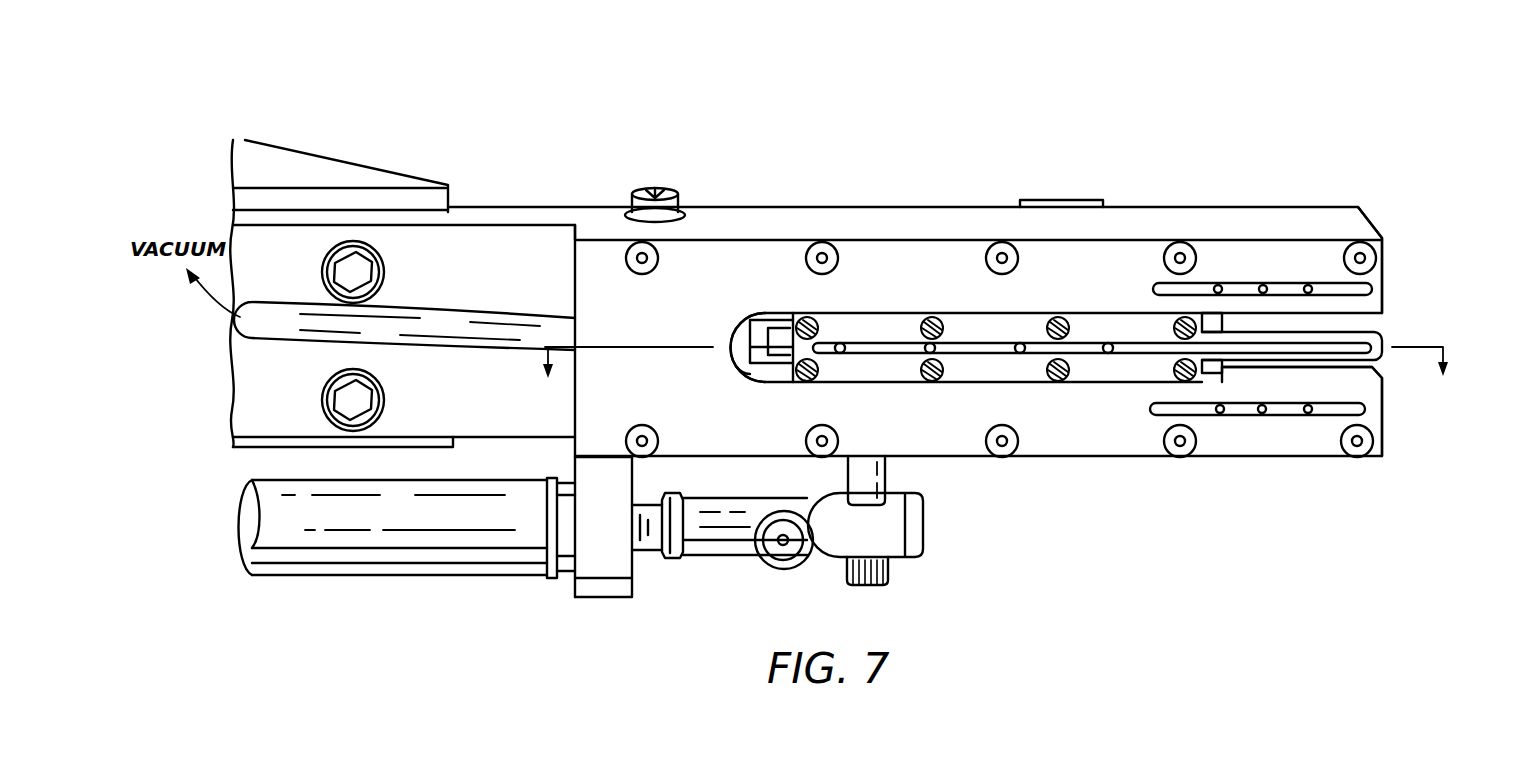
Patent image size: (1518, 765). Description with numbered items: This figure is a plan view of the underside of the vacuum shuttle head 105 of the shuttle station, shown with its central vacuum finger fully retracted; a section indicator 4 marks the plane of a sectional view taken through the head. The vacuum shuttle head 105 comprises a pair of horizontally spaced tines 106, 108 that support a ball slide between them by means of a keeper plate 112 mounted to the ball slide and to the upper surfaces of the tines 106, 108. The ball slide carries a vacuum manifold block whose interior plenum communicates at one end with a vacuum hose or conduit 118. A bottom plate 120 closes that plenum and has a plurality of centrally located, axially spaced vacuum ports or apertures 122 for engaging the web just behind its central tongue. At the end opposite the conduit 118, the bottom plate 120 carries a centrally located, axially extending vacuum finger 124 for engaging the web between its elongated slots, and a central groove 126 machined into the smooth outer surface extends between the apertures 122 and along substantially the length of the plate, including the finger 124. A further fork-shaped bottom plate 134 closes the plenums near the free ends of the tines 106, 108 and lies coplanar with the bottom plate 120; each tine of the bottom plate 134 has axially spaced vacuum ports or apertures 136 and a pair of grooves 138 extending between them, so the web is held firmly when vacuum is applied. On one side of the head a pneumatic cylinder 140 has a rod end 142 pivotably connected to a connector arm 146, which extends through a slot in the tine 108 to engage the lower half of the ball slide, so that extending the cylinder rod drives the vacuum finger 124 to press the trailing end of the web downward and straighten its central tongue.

The section line 4- 4 is at (992, 378).
The vacuum shuttle head 105 is at (350, 198).
The tine 106 is at (1382, 283).
The tine 108 is at (1383, 428).
The keeper plate 112 is at (1085, 200).
The vacuum hose or conduit 118 is at (290, 340).
The bottom plate 120 is at (958, 330).
The vacuum ports or apertures 122 is at (840, 343).
The vacuum finger 124 is at (1382, 337).
The central groove 126 is at (995, 347).
The bottom plate 134 is at (740, 443).
The vacuum ports or apertures 136 is at (1220, 414).
The grooves 138 is at (1338, 409).
The pneumatic cylinder 140 is at (353, 555).
The rod end 142 is at (900, 540).
The connector arm 146 is at (890, 470).